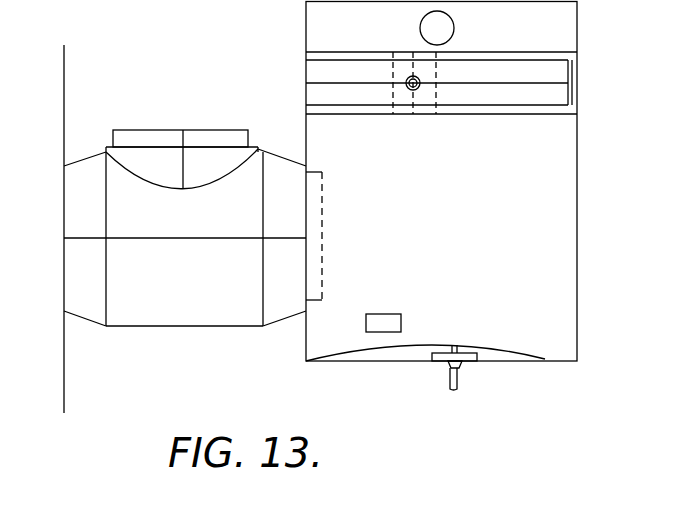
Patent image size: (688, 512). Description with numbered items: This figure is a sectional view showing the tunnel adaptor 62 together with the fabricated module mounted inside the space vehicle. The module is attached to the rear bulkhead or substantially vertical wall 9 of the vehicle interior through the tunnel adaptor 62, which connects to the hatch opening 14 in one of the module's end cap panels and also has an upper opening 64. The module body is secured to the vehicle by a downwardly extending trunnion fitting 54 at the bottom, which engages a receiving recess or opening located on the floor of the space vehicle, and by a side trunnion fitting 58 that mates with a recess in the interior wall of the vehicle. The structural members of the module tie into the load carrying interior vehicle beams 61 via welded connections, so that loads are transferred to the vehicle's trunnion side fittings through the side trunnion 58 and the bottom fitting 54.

The substantially vertical wall 9 is at (64, 82).
The hatch opening 14 is at (303, 182).
The trunnion fitting 54 is at (458, 385).
The trunnion fitting 58 is at (410, 77).
The interior vehicle beams 61 is at (559, 79).
The tunnel adaptor 62 is at (200, 316).
The upper opening 64 is at (313, 283).